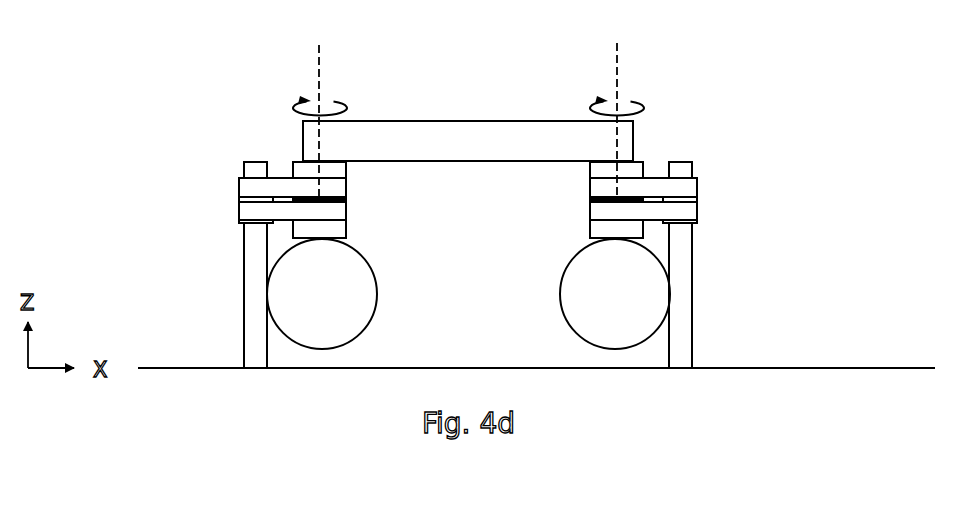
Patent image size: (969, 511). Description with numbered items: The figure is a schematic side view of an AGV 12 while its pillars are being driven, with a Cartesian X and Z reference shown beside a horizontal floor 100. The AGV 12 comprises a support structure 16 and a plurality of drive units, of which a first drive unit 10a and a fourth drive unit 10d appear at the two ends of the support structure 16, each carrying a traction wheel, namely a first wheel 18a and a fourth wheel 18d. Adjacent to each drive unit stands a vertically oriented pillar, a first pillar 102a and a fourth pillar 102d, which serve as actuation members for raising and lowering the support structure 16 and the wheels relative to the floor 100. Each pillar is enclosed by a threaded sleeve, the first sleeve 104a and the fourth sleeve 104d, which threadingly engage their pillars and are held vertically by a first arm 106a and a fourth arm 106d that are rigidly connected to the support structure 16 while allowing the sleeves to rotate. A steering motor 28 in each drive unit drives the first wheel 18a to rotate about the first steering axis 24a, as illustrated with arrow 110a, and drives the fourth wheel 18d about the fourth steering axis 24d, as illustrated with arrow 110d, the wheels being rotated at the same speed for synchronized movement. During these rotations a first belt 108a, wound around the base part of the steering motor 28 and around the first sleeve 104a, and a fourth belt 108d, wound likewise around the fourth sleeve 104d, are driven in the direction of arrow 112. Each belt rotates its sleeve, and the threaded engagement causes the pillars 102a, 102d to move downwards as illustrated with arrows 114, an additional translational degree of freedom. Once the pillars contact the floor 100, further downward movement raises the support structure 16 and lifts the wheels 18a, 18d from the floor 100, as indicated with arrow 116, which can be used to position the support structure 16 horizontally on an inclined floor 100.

The AGV 12 is at (181, 75).
The first drive unit 10a is at (285, 72).
The fourth drive unit 10d is at (650, 72).
The support structure 16 is at (480, 154).
The first wheel 18a is at (345, 304).
The fourth wheel 18d is at (644, 305).
The first steering axis 24a is at (320, 94).
The fourth steering axis 24d is at (616, 94).
The steering motor 28 is at (337, 227).
The floor 100 is at (838, 368).
The first pillar 102a is at (257, 347).
The fourth pillar 102d is at (693, 344).
The first sleeve 104a is at (240, 222).
The fourth sleeve 104d is at (698, 222).
The first arm 106a is at (255, 187).
The fourth arm 106d is at (682, 186).
The first belt 108a is at (328, 211).
The fourth belt 108d is at (607, 210).
The arrow 110a is at (287, 109).
The arrow 110d is at (649, 109).
The arrow 112 is at (237, 212).
The arrow 114 is at (210, 250).
The arrow 116 is at (486, 50).